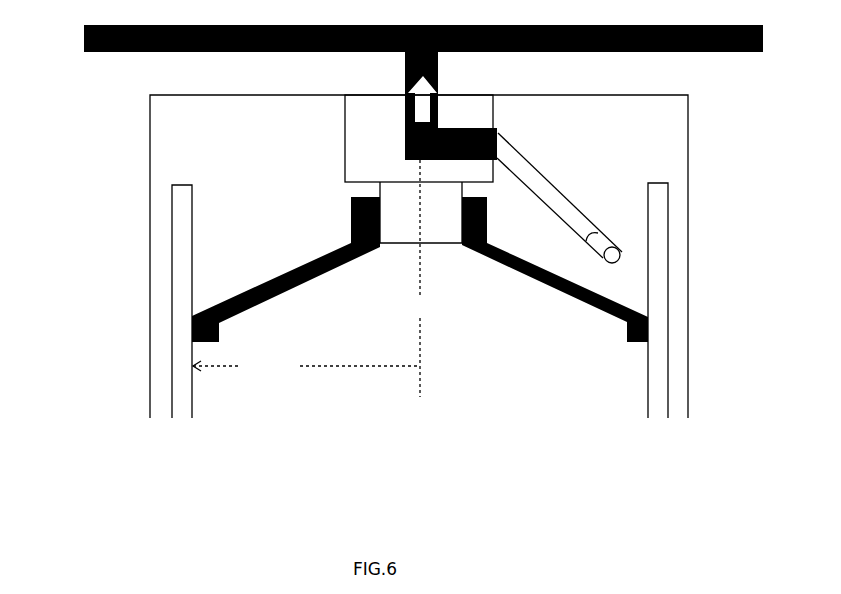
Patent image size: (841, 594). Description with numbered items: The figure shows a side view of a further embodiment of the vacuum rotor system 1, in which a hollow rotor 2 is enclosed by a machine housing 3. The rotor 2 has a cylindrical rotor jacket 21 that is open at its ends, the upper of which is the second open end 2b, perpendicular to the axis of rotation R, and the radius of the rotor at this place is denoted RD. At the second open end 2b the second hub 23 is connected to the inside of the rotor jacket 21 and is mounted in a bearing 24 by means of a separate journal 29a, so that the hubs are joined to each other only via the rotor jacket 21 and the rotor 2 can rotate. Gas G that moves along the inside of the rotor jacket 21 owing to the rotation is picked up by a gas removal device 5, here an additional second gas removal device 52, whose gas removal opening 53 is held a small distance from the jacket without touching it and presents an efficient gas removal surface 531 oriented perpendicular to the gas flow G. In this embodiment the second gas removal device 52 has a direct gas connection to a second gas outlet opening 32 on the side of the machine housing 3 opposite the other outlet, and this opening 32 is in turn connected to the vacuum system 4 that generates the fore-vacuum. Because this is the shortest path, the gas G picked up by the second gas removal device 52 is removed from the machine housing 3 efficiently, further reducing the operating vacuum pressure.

The vacuum rotor system 1 is at (112, 370).
The hollow rotor 2 is at (421, 347).
The second open end 2b is at (267, 207).
The machine housing 3 is at (150, 287).
The vacuum system 4 is at (102, 54).
The gas G is at (445, 83).
The rotor jacket 21 is at (182, 402).
The second hub 23 is at (327, 275).
The bearings 24 is at (419, 138).
The journal 29a is at (443, 250).
The second gas outlet opening 32 is at (500, 145).
The gas removal device 5 is at (634, 273).
The second gas removal device 52 is at (634, 273).
The gas removal opening 53 is at (573, 333).
The gas removal surface 531 is at (623, 259).
The axis of rotation R is at (422, 278).
The radius RD is at (305, 366).